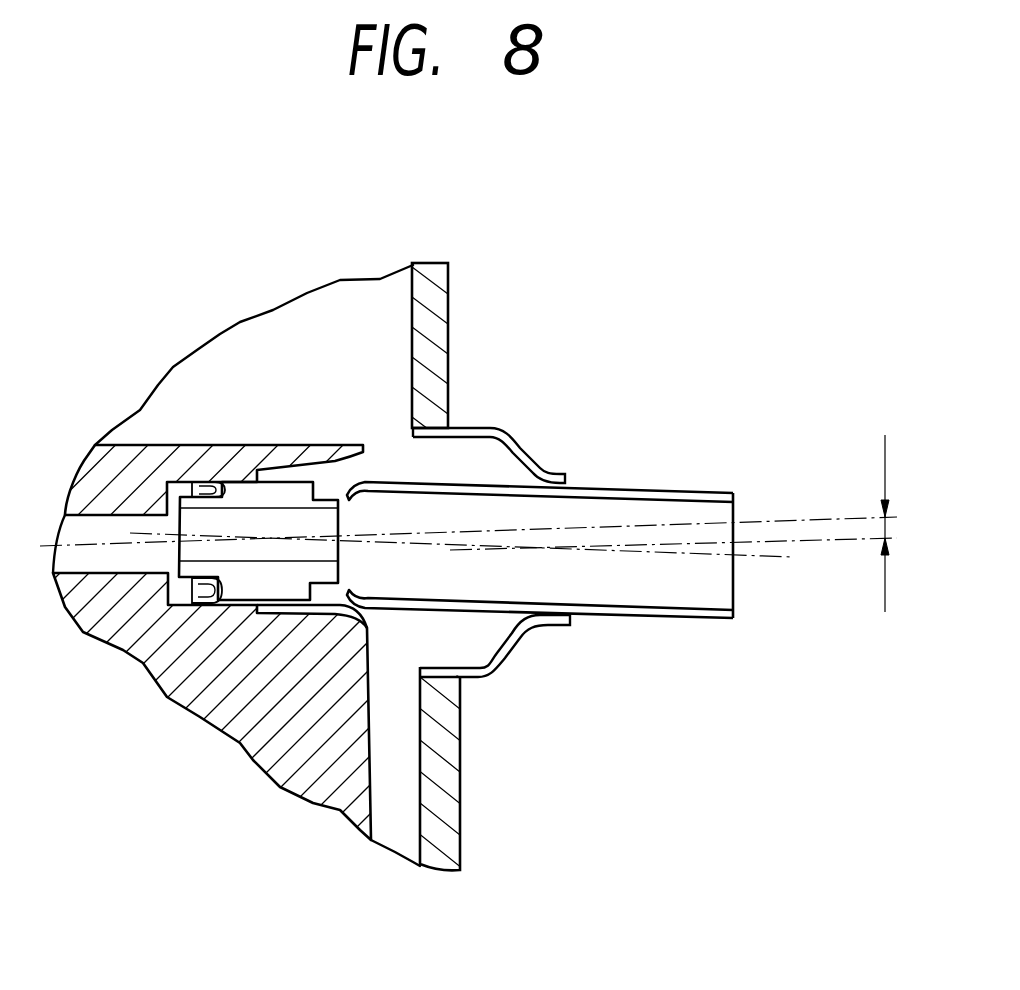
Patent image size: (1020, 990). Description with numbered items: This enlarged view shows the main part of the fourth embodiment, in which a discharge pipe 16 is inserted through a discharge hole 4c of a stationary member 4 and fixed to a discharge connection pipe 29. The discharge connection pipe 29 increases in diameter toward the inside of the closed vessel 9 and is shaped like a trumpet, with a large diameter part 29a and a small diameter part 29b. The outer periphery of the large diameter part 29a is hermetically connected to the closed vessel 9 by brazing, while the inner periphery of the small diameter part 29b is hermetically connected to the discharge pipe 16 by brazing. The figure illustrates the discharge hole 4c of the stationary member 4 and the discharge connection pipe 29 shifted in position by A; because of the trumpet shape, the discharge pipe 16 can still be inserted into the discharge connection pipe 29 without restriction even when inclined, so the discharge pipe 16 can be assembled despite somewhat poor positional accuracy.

The stationary member 4 is at (264, 700).
The discharge hole 4c is at (177, 592).
The closed vessel 9 is at (443, 302).
The discharge connection pipe 29 is at (536, 485).
The large diameter part 29a is at (477, 417).
The small diameter part 29b is at (568, 470).
The discharge pipe 16 is at (710, 493).
The positional shift A is at (904, 523).